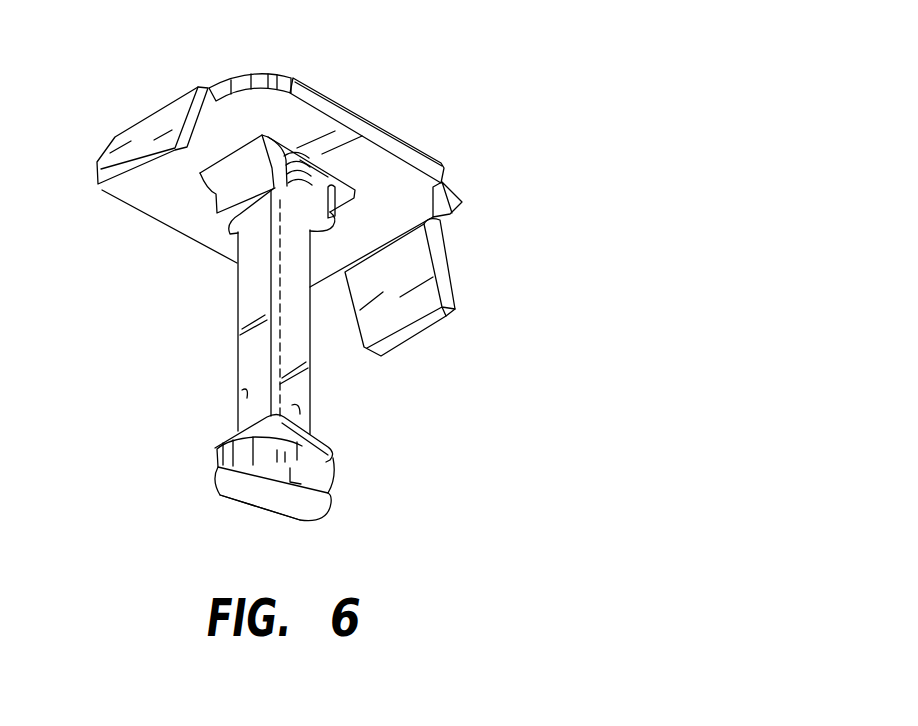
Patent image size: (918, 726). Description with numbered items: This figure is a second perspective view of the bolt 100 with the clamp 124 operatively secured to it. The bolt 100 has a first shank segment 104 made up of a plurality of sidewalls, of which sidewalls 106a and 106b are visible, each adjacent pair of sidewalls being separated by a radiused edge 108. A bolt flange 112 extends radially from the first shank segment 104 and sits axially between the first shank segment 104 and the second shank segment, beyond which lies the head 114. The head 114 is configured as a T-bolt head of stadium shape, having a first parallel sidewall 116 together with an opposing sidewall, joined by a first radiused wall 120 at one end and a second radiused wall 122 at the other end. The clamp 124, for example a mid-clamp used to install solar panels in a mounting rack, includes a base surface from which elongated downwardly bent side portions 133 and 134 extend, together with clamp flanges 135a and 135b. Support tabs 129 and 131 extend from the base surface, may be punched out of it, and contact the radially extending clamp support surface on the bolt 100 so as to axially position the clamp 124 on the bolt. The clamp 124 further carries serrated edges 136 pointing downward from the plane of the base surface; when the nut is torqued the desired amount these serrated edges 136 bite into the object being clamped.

The bolt 100 is at (236, 424).
The first shank segment 104 is at (237, 348).
The sidewall 106a is at (300, 407).
The sidewall 106b is at (242, 392).
The radiused edge 108 is at (267, 316).
The bolt flange 112 is at (330, 455).
The head 114 is at (263, 518).
The first parallel/opposing sidewall 116 is at (300, 484).
The first radiused wall 120 is at (332, 497).
The second radiused wall 122 is at (215, 466).
The clamp 124 is at (403, 137).
The support tab 129 is at (207, 190).
The support tab 131 is at (343, 210).
The elongated downwardly bent side portion 133 is at (100, 191).
The elongated downwardly bent side portion 134 is at (452, 270).
The clamp flange 135a is at (323, 93).
The clamp flange 135b is at (202, 243).
The serrated edge 136 is at (243, 77).